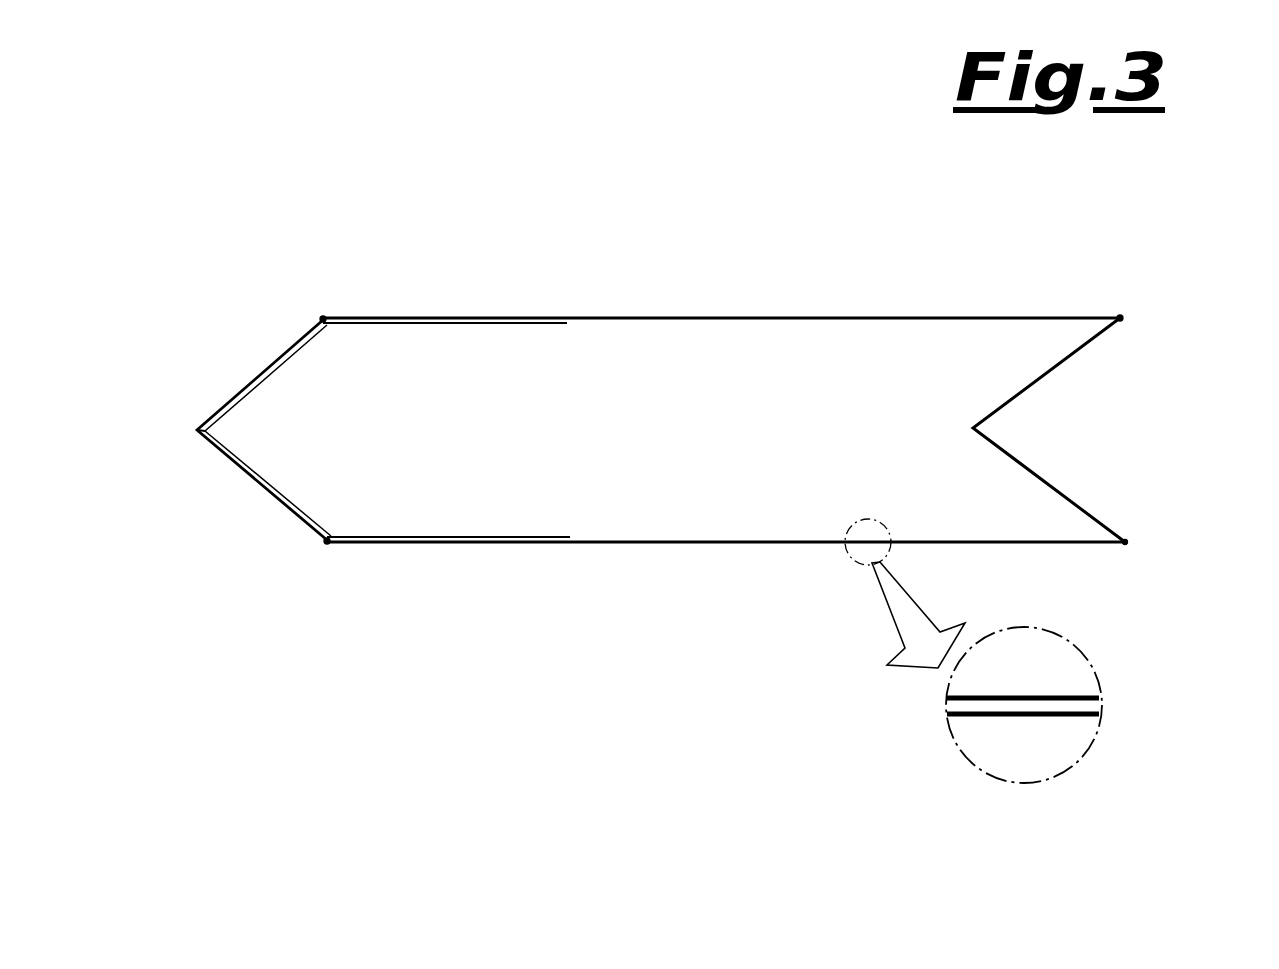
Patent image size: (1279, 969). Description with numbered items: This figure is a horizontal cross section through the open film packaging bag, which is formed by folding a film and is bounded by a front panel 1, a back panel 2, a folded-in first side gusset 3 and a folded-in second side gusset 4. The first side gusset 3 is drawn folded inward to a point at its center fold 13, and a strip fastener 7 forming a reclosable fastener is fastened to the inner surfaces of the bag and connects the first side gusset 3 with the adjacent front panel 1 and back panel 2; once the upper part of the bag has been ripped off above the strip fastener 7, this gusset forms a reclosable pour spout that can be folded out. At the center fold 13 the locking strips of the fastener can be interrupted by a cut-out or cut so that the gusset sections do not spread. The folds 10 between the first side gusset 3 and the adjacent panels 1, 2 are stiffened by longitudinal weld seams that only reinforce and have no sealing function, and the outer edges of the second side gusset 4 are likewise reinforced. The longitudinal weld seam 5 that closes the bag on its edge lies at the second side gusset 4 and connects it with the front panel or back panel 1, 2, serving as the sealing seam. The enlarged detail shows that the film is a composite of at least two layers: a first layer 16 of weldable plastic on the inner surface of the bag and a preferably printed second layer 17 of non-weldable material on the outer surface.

The front panel 1 is at (735, 545).
The back panel 2 is at (743, 316).
The first side gusset 3 is at (208, 463).
The second side gusset 4 is at (1115, 405).
The longitudinal weld seam 5 is at (1125, 545).
The strip fastener 7 is at (300, 497).
The folds 10 is at (322, 318).
The center fold 13 is at (192, 430).
The first layer 16 is at (793, 535).
The second layer 17 is at (773, 548).